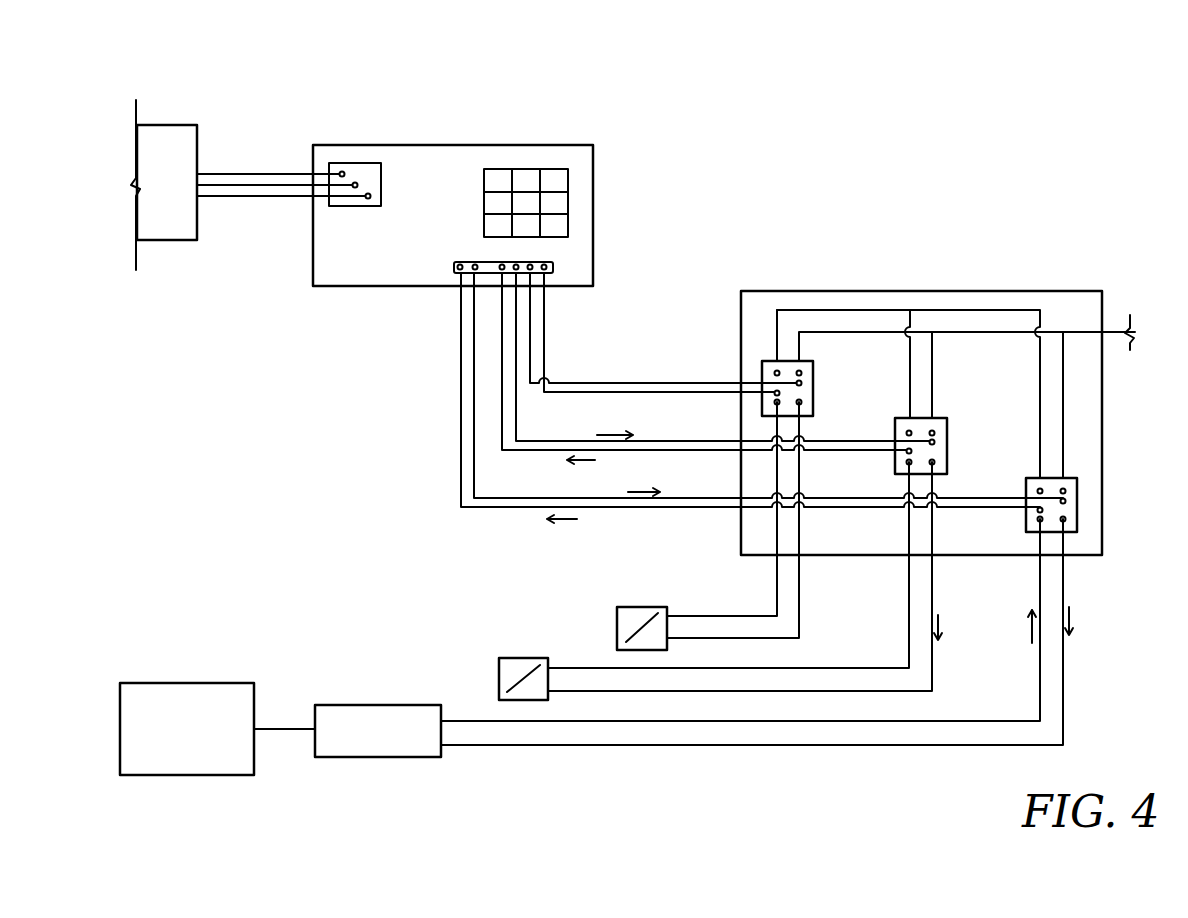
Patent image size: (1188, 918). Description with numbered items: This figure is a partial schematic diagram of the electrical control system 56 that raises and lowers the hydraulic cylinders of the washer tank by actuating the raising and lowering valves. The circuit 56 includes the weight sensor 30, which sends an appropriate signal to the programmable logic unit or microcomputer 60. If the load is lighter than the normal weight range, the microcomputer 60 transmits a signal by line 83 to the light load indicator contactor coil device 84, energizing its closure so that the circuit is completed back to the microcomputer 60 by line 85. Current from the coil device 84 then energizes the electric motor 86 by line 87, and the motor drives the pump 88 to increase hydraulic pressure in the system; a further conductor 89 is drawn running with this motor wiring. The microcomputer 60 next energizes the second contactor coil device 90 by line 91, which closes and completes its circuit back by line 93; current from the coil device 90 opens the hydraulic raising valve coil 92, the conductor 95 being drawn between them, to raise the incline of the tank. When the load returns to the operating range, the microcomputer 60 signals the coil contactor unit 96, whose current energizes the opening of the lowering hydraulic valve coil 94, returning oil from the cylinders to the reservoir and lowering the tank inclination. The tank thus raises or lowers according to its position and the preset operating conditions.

The weight sensor 30 is at (174, 177).
The microcomputer 60 is at (443, 207).
The electrical control system 56 is at (800, 186).
The coil contactor unit 96 is at (812, 394).
The second contactor coil device 90 is at (946, 448).
The light load indicator contactor coil device 84 is at (1027, 491).
The line 91 is at (583, 441).
The line 93 is at (610, 452).
The line 83 is at (683, 481).
The line 85 is at (594, 512).
The lowering hydraulic valve coil 94 is at (670, 607).
The hydraulic raising valve coil 92 is at (499, 663).
The conductor 95 is at (756, 576).
The conductor 89 is at (1041, 590).
The line 87 is at (1064, 578).
The electric motor 86 is at (395, 706).
The pump 88 is at (208, 683).